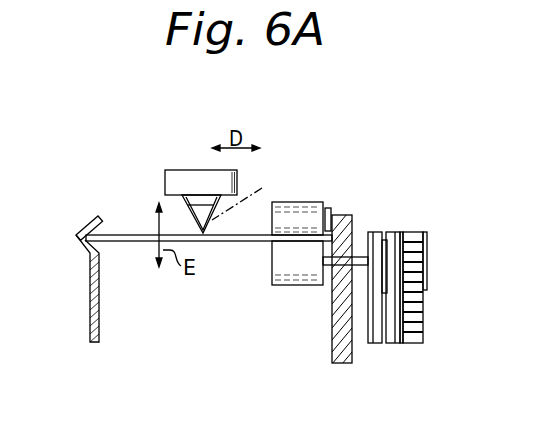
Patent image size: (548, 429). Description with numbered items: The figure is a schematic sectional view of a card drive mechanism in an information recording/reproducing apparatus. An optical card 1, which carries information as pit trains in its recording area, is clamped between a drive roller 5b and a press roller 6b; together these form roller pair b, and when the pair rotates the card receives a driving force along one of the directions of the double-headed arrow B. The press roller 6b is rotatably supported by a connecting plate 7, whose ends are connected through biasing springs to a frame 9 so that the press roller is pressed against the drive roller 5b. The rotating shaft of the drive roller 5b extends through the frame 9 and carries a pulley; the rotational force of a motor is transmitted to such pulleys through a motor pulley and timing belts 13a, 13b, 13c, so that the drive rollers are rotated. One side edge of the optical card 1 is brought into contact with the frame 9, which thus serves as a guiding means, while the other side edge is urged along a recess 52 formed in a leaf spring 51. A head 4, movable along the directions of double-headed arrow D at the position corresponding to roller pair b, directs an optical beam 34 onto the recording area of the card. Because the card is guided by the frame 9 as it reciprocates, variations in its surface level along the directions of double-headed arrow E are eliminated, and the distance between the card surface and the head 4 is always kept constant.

The optical card 1 is at (133, 234).
The head 4 is at (188, 178).
The optical beam 34 is at (251, 192).
The recess 52 is at (86, 230).
The leaf spring 51 is at (92, 318).
The press roller 6b is at (310, 202).
The drive roller 5b is at (297, 286).
The connecting plate 7 is at (331, 210).
The frame 9 is at (346, 352).
The timing belt 13b is at (373, 231).
The timing belt 13c is at (396, 231).
The timing belt 13a is at (420, 310).